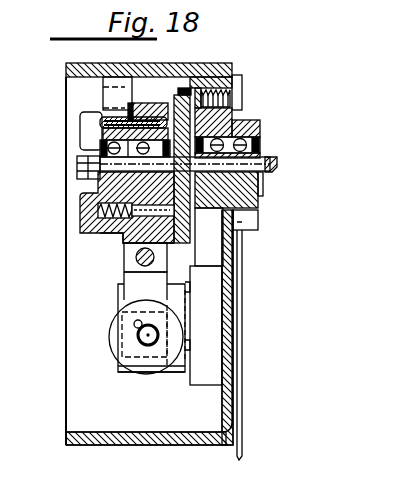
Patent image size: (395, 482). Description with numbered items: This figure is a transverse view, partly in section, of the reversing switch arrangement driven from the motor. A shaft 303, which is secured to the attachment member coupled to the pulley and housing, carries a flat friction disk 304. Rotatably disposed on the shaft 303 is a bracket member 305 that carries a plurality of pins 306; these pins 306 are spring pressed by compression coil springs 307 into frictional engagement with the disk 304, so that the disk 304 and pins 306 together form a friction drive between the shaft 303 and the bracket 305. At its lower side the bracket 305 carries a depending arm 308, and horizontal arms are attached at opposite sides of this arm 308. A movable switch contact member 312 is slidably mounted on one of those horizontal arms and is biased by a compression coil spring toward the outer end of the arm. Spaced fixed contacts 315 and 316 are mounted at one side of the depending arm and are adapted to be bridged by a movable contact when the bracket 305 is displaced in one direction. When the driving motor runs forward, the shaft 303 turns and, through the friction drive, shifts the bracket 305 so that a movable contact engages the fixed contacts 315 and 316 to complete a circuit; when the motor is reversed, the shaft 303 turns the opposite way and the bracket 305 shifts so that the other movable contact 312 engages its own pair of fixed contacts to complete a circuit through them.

The shaft 303 is at (273, 162).
The flat friction disk 304 is at (184, 92).
The bracket member 305 is at (80, 208).
The pins 306 is at (172, 120).
The compression coil springs 307 is at (102, 233).
The depending arm 308 is at (134, 285).
The movable switch contact member 312 is at (110, 339).
The fixed contact 315 is at (118, 289).
The fixed contact 316 is at (118, 372).